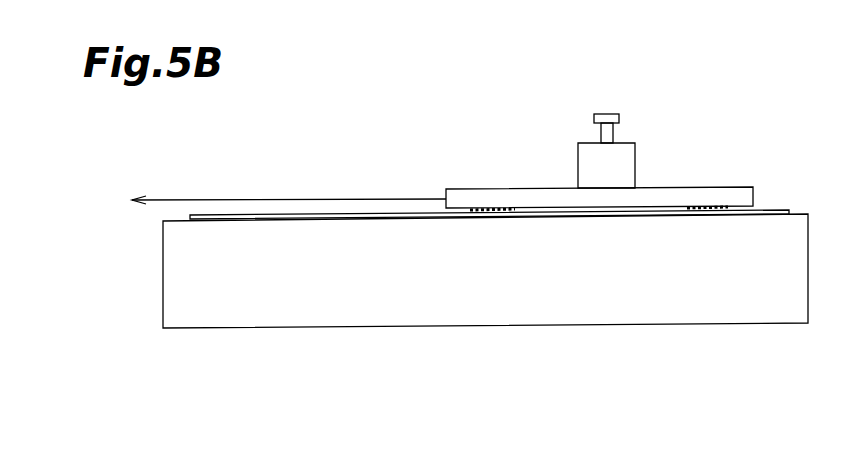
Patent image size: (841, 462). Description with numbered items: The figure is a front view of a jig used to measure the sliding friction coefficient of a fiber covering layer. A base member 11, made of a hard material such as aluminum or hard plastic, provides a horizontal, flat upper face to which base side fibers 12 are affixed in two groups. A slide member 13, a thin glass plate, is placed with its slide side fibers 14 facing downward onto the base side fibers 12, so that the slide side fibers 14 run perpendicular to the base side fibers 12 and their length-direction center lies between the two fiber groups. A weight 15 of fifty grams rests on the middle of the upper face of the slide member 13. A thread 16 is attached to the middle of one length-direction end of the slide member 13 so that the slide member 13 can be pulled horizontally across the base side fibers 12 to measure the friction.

The base member 11 is at (538, 312).
The base side fiber 12 is at (328, 215).
The slide member 13 is at (746, 194).
The slide side fiber 14 is at (500, 208).
The weight 15 is at (628, 163).
The thread 16 is at (253, 200).